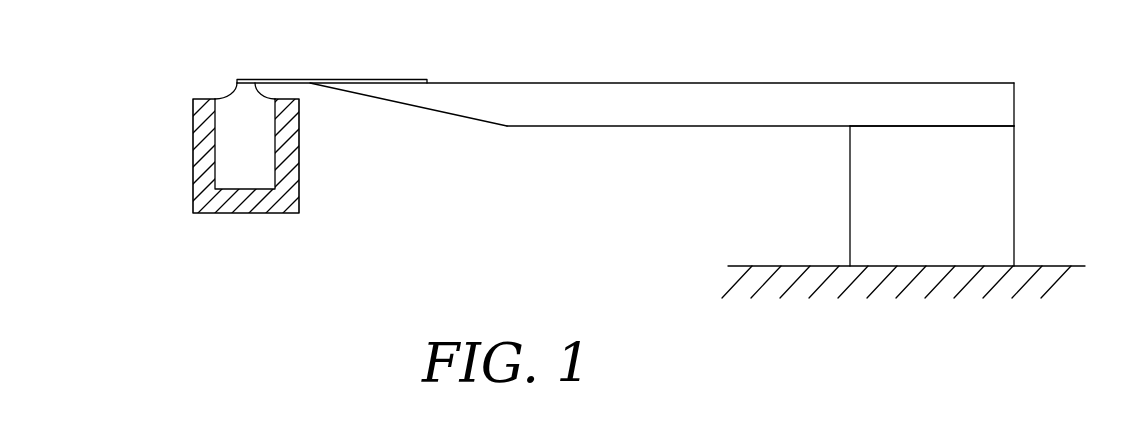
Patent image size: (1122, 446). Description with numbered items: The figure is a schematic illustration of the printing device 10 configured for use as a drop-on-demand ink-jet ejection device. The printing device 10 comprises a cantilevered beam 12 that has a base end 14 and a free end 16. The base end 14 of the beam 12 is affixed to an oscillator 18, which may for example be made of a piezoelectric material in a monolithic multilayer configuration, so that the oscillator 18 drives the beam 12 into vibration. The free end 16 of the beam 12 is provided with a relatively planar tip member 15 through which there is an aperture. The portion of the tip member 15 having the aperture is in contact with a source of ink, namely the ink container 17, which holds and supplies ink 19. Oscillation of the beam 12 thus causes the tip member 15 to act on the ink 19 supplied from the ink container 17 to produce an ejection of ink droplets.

The printing device 10 is at (735, 64).
The cantilevered beam 12 is at (247, 64).
The base end 14 is at (938, 97).
The tip member 15 is at (373, 79).
The free end 16 is at (460, 116).
The ink container 17 is at (247, 160).
The oscillator 18 is at (1003, 208).
The ink 19 is at (214, 153).